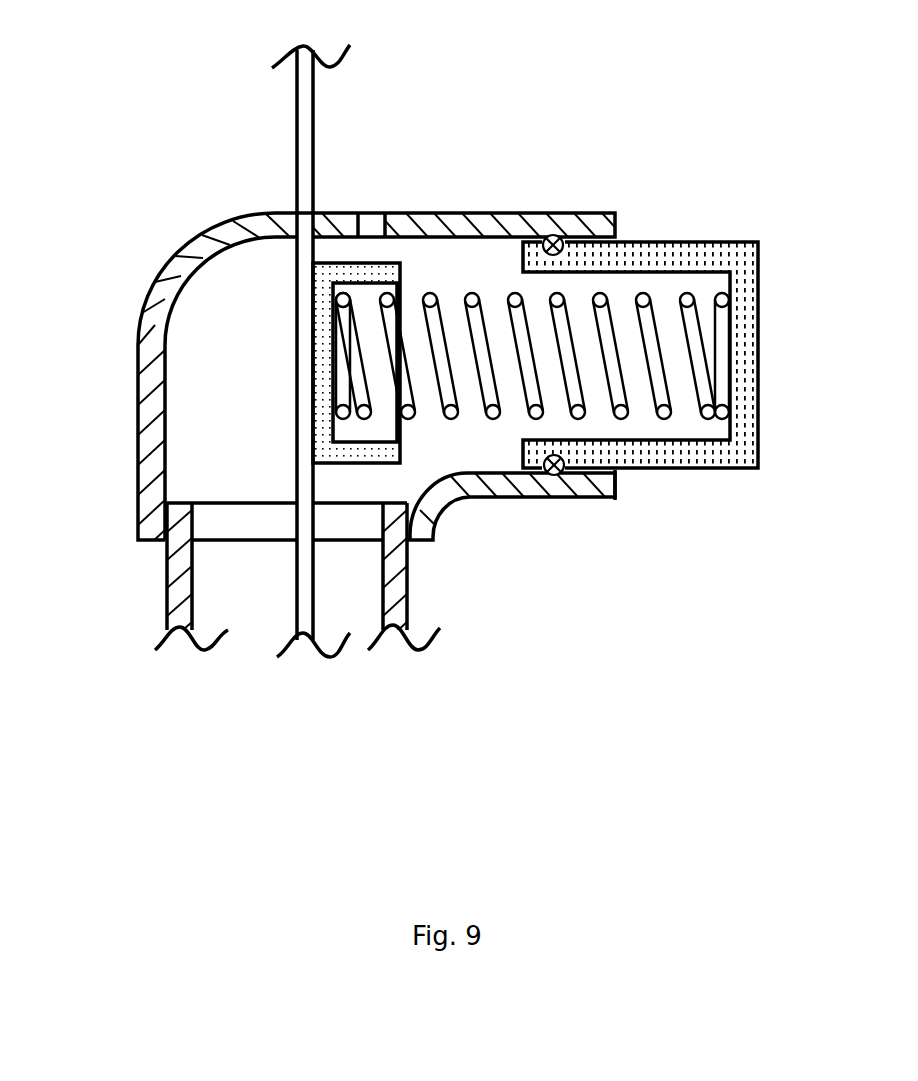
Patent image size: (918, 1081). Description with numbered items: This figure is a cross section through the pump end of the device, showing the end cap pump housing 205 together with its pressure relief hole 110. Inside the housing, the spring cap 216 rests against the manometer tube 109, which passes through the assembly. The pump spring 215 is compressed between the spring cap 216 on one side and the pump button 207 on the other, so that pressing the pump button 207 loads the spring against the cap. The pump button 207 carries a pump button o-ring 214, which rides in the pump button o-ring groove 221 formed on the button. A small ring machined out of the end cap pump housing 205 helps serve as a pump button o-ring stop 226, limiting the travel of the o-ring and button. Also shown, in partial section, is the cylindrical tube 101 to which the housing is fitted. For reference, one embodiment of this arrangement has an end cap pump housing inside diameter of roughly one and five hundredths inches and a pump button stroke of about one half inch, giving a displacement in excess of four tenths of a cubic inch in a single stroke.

The cylindrical tube 101 is at (167, 609).
The manometer tube 109 is at (297, 120).
The pressure relief hole 110 is at (370, 213).
The end cap pump housing 205 is at (183, 245).
The pump button 207 is at (745, 242).
The pump button o-ring 214 is at (588, 493).
The pump spring 215 is at (472, 297).
The spring cap 216 is at (400, 262).
The pump button o-ring groove 221 is at (618, 480).
The pump button o-ring stop 226 is at (554, 478).